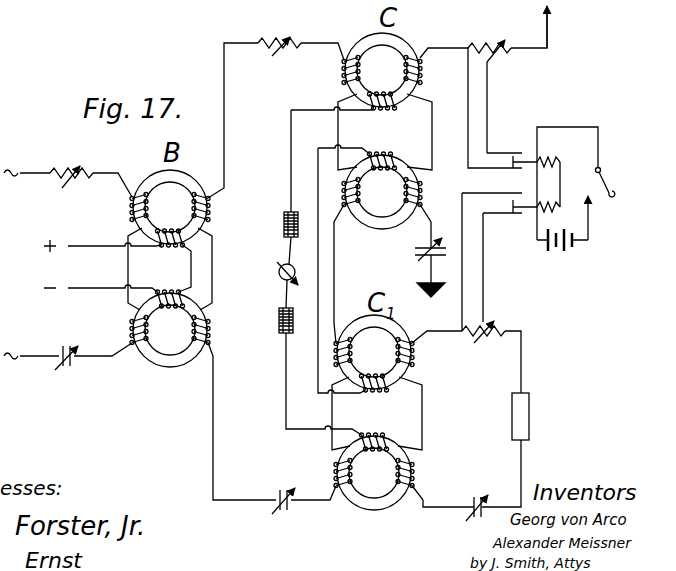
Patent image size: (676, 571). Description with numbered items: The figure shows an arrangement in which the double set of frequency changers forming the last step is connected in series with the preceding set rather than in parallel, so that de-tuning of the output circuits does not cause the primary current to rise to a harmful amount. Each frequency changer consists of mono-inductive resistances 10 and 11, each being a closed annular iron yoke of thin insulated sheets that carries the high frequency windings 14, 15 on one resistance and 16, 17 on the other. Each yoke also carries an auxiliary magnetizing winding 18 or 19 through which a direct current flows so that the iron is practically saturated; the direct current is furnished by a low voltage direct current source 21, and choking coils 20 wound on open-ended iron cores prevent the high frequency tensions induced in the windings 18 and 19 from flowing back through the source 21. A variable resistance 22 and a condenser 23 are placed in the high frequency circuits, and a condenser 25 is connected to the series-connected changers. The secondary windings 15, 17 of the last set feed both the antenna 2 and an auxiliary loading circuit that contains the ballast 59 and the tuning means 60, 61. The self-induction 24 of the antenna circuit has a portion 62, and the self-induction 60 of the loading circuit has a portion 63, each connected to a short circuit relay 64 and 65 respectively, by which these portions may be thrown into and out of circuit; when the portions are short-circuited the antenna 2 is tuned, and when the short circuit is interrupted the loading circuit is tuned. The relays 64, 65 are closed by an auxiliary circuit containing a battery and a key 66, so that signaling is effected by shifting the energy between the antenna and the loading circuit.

The antenna 2 is at (548, 24).
The mono-inductive resistance 10 is at (276, 211).
The mono-inductive resistance 11 is at (276, 332).
The winding 14 is at (132, 208).
The winding 15 is at (209, 208).
The winding 16 is at (132, 330).
The winding 17 is at (207, 331).
The auxiliary magnetizing winding 18 is at (276, 253).
The auxiliary magnetizing winding 19 is at (276, 293).
The choking coil 20 is at (284, 226).
The direct current source 21 is at (279, 273).
The variable resistance 22 is at (175, 101).
The condenser 23 is at (173, 441).
The self-induction 24 is at (489, 34).
The condenser 25 is at (414, 253).
The ballast 59 is at (529, 416).
The tuning means (self-induction) 60 is at (489, 344).
The tuning means 61 is at (475, 520).
The portion of self-induction 62 is at (489, 64).
The portion of self-induction 63 is at (481, 325).
The short circuit relay 64 is at (517, 108).
The short circuit relay 65 is at (530, 229).
The key 66 is at (610, 203).